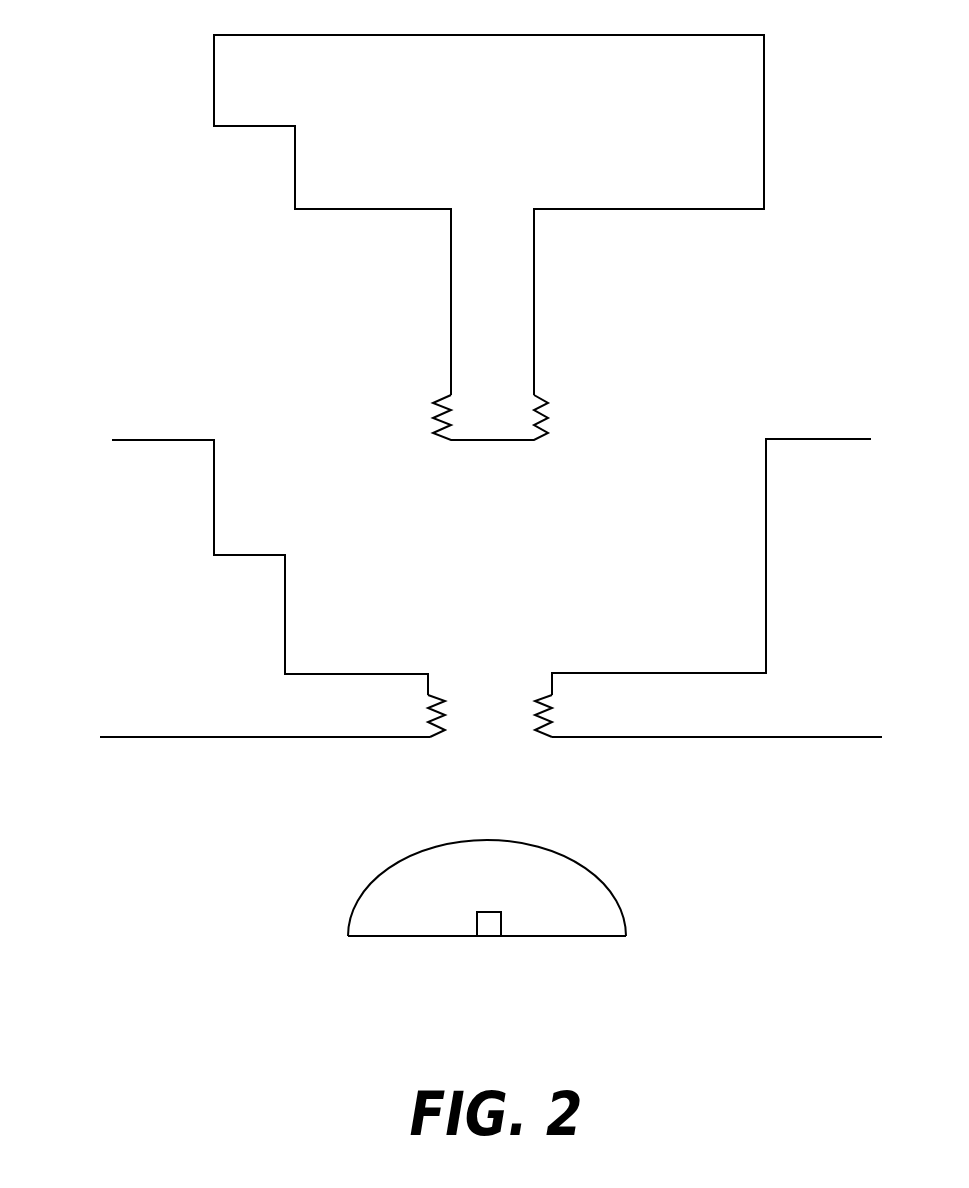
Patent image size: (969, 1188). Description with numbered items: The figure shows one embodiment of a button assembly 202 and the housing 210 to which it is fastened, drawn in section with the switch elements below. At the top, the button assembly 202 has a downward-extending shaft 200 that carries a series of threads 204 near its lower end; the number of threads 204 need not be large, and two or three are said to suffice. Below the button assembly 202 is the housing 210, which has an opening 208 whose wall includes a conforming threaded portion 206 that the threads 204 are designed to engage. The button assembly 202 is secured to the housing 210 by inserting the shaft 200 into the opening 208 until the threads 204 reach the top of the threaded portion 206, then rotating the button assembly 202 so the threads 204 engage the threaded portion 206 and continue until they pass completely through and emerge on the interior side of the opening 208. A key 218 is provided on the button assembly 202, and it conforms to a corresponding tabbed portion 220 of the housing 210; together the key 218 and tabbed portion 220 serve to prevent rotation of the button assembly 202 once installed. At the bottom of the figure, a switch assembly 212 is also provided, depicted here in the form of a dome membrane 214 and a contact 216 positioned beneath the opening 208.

The shaft 200 is at (496, 324).
The button assembly 202 is at (404, 237).
The threads 204 is at (438, 392).
The threaded portion 206 is at (540, 712).
The opening 208 is at (448, 687).
The housing 210 is at (449, 533).
The switch assembly 212 is at (527, 901).
The dome membrane 214 is at (397, 865).
The contact 216 is at (502, 938).
The key 218 is at (255, 148).
The tabbed portion 220 is at (270, 579).